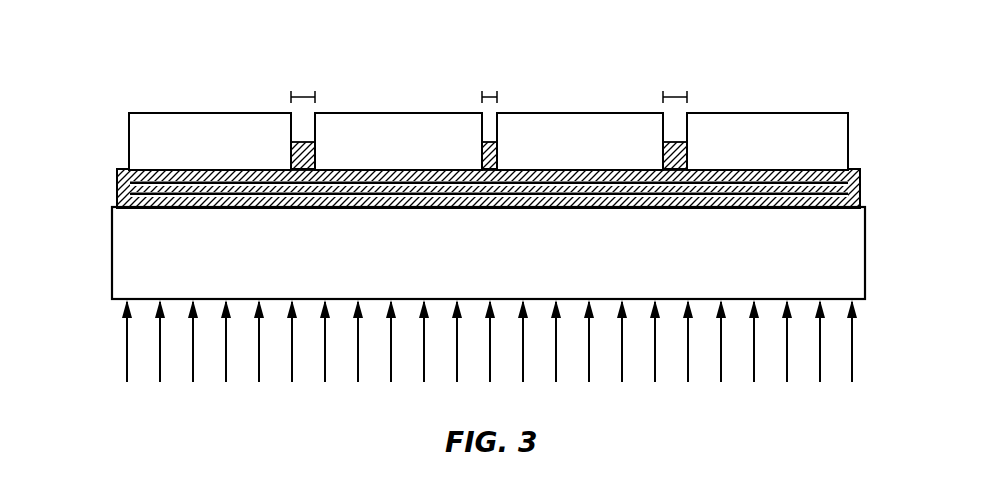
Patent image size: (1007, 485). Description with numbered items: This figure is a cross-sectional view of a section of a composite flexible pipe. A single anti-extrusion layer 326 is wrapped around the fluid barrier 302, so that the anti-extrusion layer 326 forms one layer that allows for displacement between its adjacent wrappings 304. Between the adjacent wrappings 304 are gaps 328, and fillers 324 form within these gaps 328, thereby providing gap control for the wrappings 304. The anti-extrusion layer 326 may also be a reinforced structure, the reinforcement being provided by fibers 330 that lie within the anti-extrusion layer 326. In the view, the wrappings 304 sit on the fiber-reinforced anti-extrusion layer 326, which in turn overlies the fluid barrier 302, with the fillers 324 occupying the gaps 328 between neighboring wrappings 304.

The fluid barrier 302 is at (113, 235).
The adjacent wrappings 304 is at (192, 113).
The fillers 324 is at (312, 153).
The anti-extrusion layer 326 is at (117, 193).
The gaps 328 is at (305, 90).
The fibers 330 is at (862, 182).